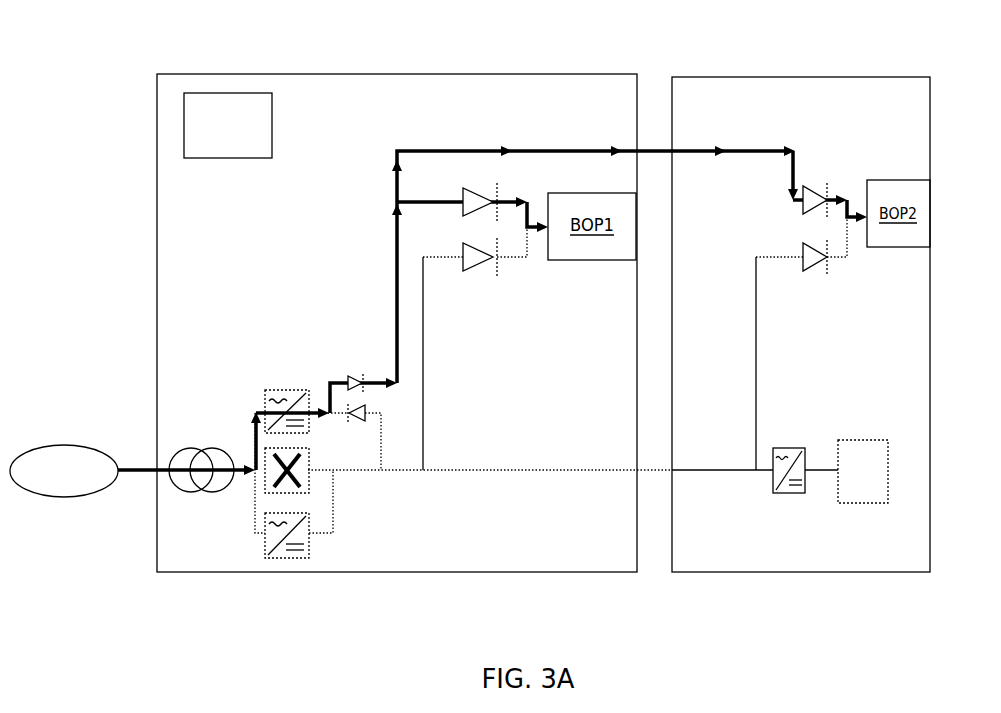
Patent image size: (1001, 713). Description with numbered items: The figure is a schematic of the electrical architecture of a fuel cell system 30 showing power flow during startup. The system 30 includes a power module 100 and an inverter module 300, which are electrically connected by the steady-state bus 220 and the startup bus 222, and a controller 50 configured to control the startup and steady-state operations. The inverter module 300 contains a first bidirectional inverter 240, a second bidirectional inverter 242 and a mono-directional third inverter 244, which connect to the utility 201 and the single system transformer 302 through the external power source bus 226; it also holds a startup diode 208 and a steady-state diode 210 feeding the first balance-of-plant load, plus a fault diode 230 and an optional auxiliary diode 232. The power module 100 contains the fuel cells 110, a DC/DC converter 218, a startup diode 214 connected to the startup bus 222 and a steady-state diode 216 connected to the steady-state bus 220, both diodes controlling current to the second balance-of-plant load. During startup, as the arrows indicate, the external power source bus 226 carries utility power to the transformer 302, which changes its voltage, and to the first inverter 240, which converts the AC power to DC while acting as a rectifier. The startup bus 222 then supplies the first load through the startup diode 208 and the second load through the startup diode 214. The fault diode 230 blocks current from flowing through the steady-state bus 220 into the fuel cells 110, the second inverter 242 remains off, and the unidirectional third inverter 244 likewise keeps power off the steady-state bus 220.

The inverter module 300 is at (396, 74).
The power module 100 is at (802, 77).
The controller 50 is at (216, 138).
The fuel cell system 30 is at (509, 619).
The utility 201 is at (63, 443).
The external power source bus 226 is at (157, 468).
The system transformer 302 is at (172, 487).
The startup bus 222 is at (583, 150).
The startup diode 208 is at (470, 185).
The steady-state diode 210 is at (475, 268).
The startup diode 214 is at (812, 188).
The steady-state diode 216 is at (810, 267).
The steady-state bus 220 is at (422, 390).
The auxiliary diode 232 is at (352, 377).
The fault diode 230 is at (364, 421).
The first bidirectional inverter 240 is at (263, 400).
The second bidirectional inverter 242 is at (310, 475).
The third inverter 244 is at (270, 553).
The DC/DC converter 218 is at (778, 493).
The fuel cells 110 is at (840, 503).